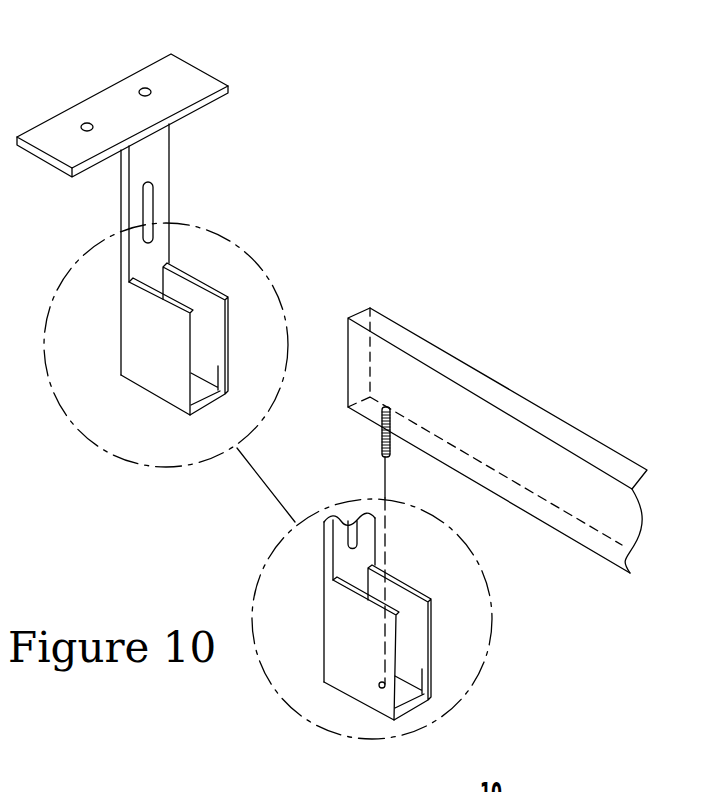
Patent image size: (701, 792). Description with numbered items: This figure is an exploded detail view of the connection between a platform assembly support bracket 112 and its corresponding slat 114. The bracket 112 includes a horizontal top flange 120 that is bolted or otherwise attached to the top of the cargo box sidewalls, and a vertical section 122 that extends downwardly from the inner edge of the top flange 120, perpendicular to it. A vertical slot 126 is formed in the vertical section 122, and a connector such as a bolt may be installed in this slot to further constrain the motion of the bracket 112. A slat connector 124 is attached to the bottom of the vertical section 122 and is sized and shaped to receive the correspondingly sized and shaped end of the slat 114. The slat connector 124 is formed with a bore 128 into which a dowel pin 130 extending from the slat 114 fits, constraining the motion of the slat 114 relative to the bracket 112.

The bracket 112 is at (241, 161).
The horizontal top flange 120 is at (193, 77).
The vertical section 122 is at (135, 188).
The vertical slot 126 is at (141, 230).
The slat connector 124 is at (132, 367).
The bore 128 is at (380, 691).
The slat 114 is at (480, 377).
The dowel pin 130 is at (382, 439).